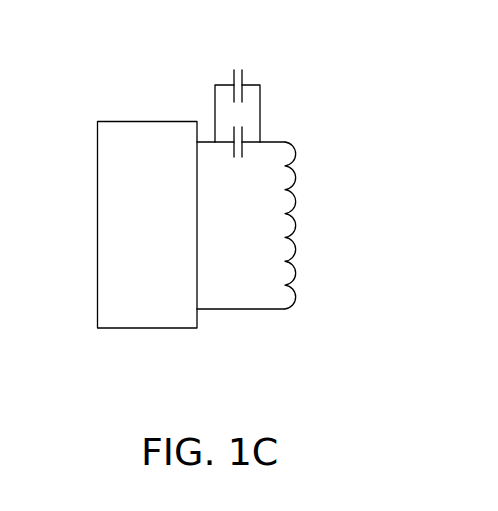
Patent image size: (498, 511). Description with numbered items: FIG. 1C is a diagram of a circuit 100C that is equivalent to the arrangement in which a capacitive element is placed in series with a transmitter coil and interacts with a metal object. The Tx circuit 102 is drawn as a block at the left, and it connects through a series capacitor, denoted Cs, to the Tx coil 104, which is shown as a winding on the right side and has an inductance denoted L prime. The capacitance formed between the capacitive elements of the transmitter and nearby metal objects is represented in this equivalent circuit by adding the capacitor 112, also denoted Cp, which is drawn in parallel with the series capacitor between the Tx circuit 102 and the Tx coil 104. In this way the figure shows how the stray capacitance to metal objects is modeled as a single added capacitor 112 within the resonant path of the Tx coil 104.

The transmit circuit arrangement 100C is at (220, 216).
The Tx circuit 102 is at (138, 121).
The capacitor 112 is at (230, 66).
The Tx coil 104 is at (296, 265).